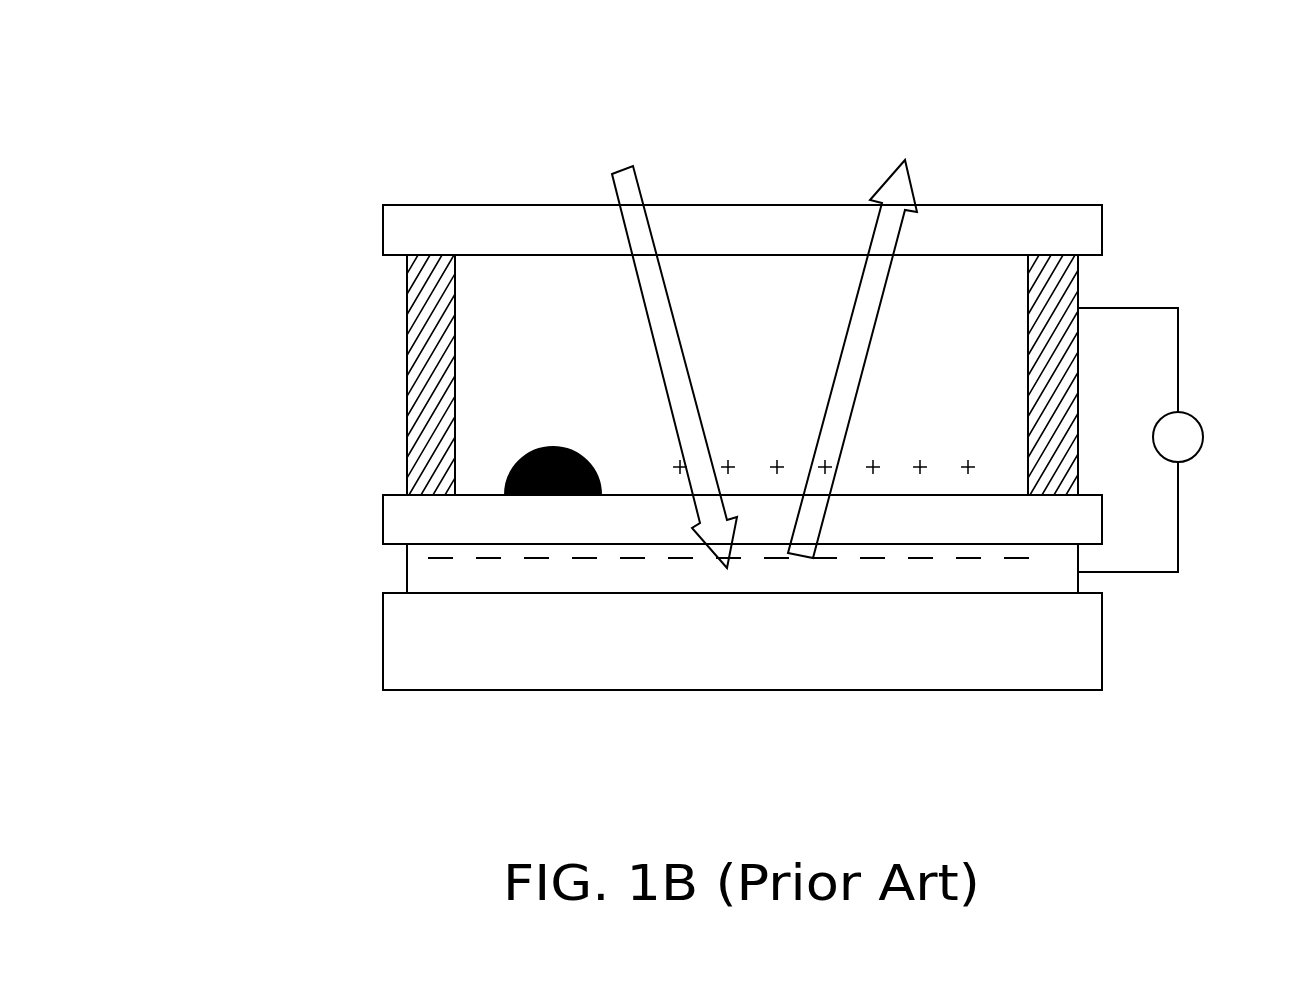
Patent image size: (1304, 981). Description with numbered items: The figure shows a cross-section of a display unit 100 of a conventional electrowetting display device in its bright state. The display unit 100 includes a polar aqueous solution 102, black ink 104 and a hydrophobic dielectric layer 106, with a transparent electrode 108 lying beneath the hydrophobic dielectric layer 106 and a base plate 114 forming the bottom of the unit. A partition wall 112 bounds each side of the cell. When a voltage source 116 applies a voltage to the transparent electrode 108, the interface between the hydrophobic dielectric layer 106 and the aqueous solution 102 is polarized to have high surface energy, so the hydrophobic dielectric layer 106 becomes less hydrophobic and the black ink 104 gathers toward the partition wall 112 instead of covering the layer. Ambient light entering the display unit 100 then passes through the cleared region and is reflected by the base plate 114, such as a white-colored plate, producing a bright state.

The display unit 100 is at (183, 47).
The polar aqueous solution 102 is at (483, 378).
The black ink 104 is at (522, 458).
The hydrophobic dielectric layer 106 is at (400, 517).
The transparent electrode 108 is at (893, 582).
The partition wall 112 is at (420, 425).
The base plate 114 is at (422, 660).
The voltage source 116 is at (1195, 410).